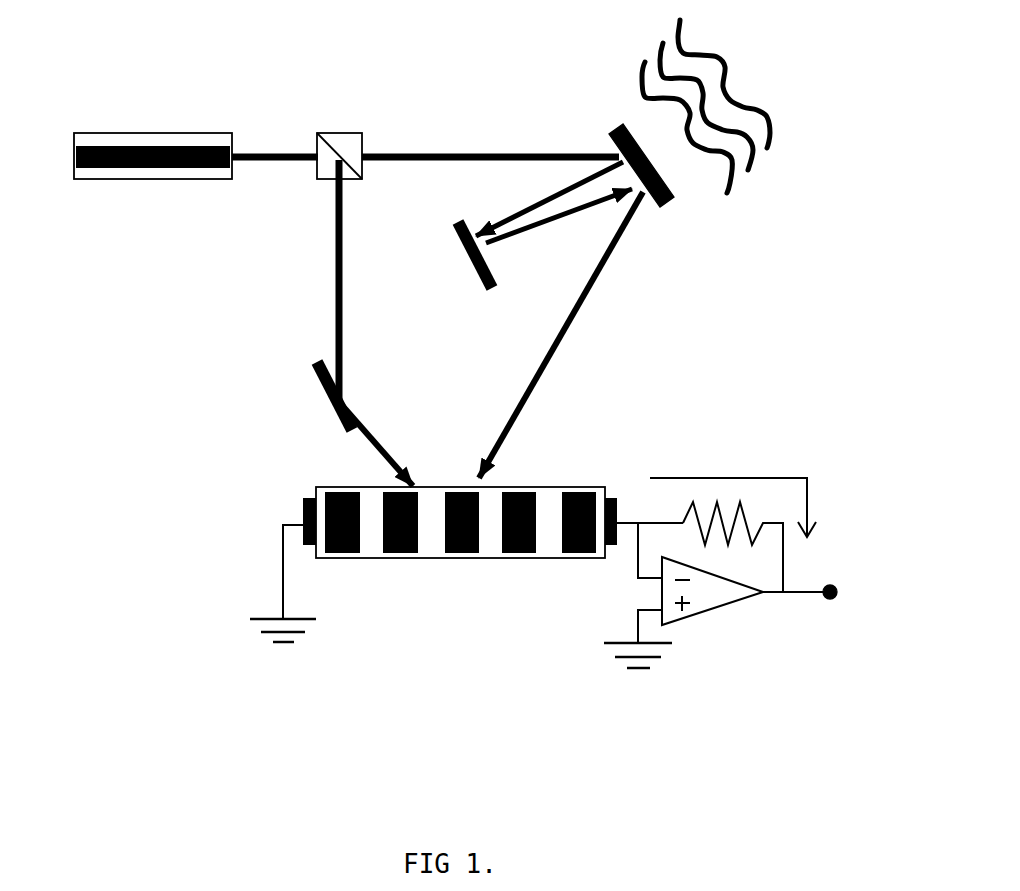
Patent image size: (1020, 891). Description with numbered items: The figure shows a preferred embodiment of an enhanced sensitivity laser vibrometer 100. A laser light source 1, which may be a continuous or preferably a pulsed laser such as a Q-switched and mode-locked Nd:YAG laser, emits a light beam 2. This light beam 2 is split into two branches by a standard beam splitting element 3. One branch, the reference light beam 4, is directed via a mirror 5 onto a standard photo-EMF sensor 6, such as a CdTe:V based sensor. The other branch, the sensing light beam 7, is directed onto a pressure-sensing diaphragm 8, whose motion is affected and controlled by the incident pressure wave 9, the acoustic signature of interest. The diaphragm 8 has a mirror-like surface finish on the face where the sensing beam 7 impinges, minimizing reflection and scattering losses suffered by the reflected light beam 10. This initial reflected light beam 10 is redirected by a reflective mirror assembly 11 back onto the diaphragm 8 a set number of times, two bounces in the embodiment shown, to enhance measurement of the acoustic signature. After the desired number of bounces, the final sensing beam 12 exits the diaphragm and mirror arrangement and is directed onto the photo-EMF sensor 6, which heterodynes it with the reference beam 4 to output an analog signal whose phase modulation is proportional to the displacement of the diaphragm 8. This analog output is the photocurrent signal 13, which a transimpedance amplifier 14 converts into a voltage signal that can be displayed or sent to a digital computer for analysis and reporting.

The enhanced sensitivity laser vibrometer 100 is at (436, 387).
The laser light source 1 is at (142, 128).
The light beam 2 is at (287, 147).
The beam splitting element 3 is at (342, 128).
The reference light beam 4 is at (323, 302).
The mirror 5 is at (312, 393).
The photo-EMF sensor 6 is at (470, 563).
The sensing light beam 7 is at (498, 145).
The diaphragm 8 is at (665, 217).
The incident pressure wave 9 is at (625, 55).
The reflected light beam 10 is at (542, 193).
The reflective mirror assembly 11 is at (467, 265).
The final sensing beam 12 is at (583, 318).
The photocurrent signal 13 is at (767, 463).
The transimpedance amplifier 14 is at (736, 620).